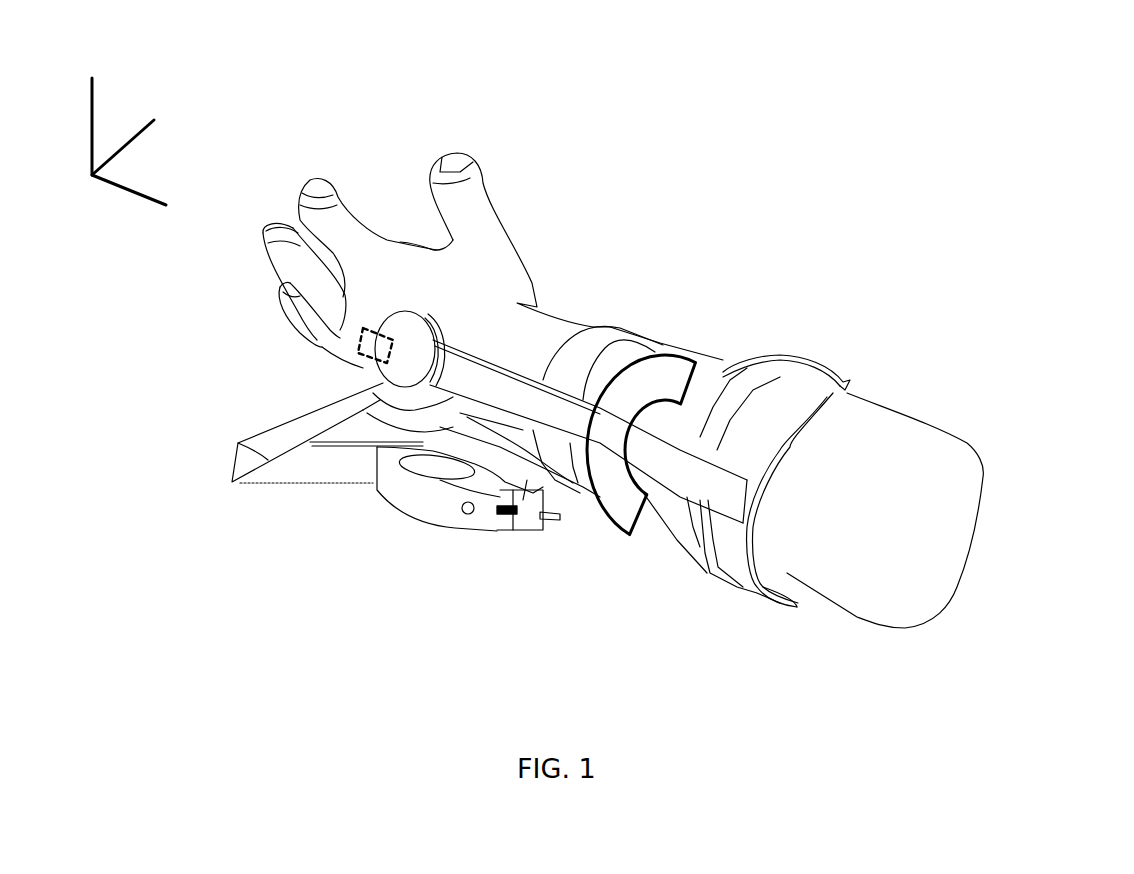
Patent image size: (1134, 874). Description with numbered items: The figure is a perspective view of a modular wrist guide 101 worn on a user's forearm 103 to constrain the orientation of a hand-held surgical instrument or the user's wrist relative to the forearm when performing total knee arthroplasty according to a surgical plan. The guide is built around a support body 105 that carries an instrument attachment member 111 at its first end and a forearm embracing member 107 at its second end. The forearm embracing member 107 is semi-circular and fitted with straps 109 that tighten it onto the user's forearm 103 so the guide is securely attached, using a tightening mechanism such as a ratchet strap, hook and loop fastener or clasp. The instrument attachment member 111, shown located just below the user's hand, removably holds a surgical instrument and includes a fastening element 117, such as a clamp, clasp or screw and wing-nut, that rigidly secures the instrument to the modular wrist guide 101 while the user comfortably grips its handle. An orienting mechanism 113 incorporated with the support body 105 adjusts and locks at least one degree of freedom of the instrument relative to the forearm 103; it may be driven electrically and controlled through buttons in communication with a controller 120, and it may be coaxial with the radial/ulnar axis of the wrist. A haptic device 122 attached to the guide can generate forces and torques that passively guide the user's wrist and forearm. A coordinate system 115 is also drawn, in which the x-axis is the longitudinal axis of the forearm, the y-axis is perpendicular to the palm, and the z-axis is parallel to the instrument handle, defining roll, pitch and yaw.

The modular wrist guide 101 is at (840, 164).
The user's forearm 103 is at (918, 630).
The support body 105 is at (236, 457).
The forearm embracing member 107 is at (747, 358).
The straps 109 is at (708, 568).
The instrument attachment member 111 is at (450, 520).
The orienting mechanism 113 is at (427, 322).
The coordinate system 115 is at (187, 99).
The fastening element 117 is at (474, 509).
The controller 120 is at (360, 343).
The haptic device 122 is at (643, 363).